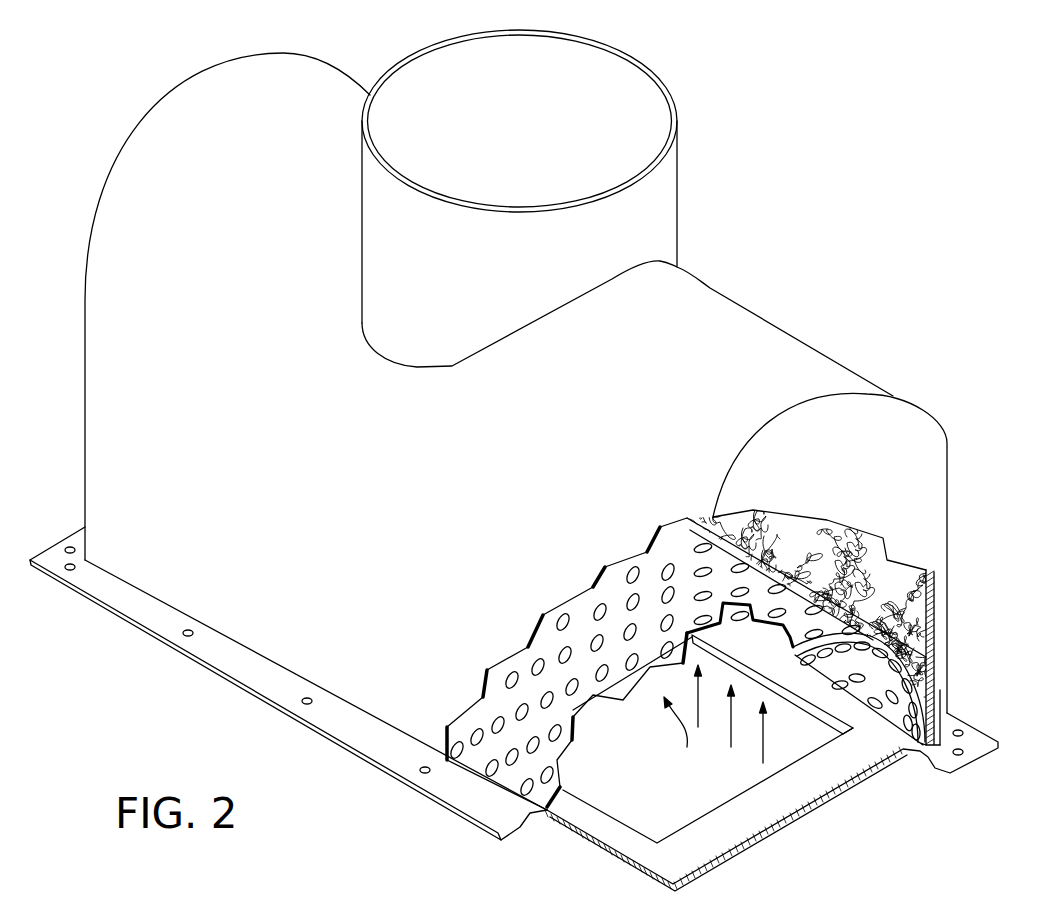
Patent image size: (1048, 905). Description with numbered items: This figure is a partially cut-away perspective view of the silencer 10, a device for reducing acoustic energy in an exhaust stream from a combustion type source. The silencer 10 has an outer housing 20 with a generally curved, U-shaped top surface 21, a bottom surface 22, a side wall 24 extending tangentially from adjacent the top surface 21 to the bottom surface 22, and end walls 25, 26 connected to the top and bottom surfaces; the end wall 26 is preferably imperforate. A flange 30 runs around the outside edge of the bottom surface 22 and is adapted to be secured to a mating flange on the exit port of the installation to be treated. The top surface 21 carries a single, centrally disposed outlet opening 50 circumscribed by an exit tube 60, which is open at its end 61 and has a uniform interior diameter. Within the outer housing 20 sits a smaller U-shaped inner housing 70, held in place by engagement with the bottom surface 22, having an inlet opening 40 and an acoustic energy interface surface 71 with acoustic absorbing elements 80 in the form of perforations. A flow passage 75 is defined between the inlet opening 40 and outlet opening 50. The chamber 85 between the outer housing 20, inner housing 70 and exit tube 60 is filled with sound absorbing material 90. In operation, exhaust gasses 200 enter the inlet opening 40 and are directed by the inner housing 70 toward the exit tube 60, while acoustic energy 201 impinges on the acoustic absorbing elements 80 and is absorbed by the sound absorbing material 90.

The silencer 10 is at (823, 298).
The outer housing 20 is at (946, 440).
The top surface 21 is at (712, 298).
The bottom surface 22 is at (863, 760).
The side wall 24 is at (190, 399).
The end wall 25 is at (936, 572).
The end wall 26 is at (112, 194).
The flange 30 is at (163, 615).
The inlet opening 40 is at (655, 806).
The outlet opening 50 is at (593, 290).
The exit tube 60 is at (677, 180).
The open end 61 is at (397, 75).
The inner housing 70 is at (914, 648).
The acoustic energy interface surface 71 is at (577, 617).
The flow passage 75 is at (832, 718).
The acoustic absorbing elements 80 is at (631, 571).
The chamber 85 is at (693, 523).
The sound absorbing material 90 is at (797, 522).
The exhaust gasses 200 is at (684, 742).
The acoustic energy 201 is at (761, 752).